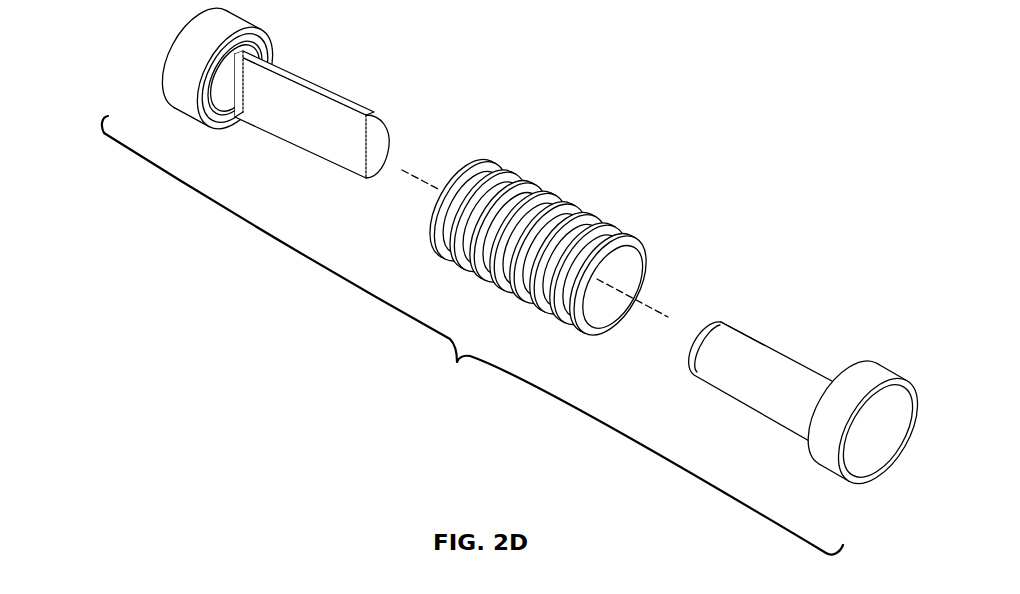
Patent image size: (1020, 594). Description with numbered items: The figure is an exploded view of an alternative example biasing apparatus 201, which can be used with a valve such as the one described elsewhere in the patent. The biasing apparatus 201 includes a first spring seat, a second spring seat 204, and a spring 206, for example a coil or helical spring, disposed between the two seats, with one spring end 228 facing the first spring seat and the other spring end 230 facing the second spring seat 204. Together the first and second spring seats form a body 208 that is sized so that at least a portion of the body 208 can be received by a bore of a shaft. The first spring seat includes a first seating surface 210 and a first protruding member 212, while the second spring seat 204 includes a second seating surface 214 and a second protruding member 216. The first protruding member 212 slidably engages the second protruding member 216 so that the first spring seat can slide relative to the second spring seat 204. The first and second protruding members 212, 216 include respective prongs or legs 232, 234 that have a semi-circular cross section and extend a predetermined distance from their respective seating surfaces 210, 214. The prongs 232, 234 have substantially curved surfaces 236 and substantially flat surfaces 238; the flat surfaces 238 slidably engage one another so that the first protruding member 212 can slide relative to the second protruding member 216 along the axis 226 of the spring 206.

The biasing apparatus 201 is at (730, 60).
The second spring seat 204 is at (883, 373).
The spring 206 is at (565, 199).
The body 208 is at (472, 335).
The first seating surface 210 is at (222, 130).
The first protruding member 212 is at (323, 66).
The second seating surface 214 is at (837, 367).
The second protruding member 216 is at (786, 336).
The axis 226 is at (660, 325).
The first end coil 228 is at (483, 157).
The second end coil 230 is at (585, 337).
The prong 232 is at (280, 135).
The prong 234 is at (773, 420).
The curved surfaces 236 is at (385, 132).
The flat surfaces 238 is at (353, 163).